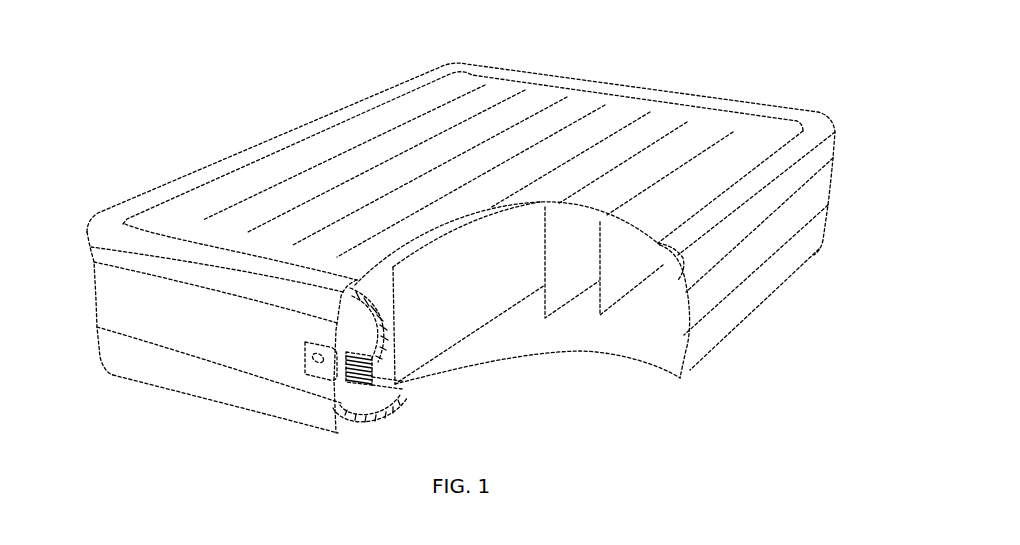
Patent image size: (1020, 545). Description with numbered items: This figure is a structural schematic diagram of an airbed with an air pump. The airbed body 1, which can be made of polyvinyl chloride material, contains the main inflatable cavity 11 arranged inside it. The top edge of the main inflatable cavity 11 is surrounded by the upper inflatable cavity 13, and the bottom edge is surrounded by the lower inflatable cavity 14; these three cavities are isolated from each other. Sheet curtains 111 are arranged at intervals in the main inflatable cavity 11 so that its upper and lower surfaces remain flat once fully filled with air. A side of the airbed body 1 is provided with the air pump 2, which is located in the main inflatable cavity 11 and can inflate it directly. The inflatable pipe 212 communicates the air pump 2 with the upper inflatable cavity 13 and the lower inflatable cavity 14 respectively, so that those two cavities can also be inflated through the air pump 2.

The airbed body 1 is at (333, 145).
The main inflatable cavity 11 is at (668, 312).
The sheet curtains 111 is at (443, 317).
The upper inflatable cavity 13 is at (673, 263).
The lower inflatable cavity 14 is at (675, 367).
The air pump 2 is at (357, 370).
The inflatable pipe 212 is at (353, 288).